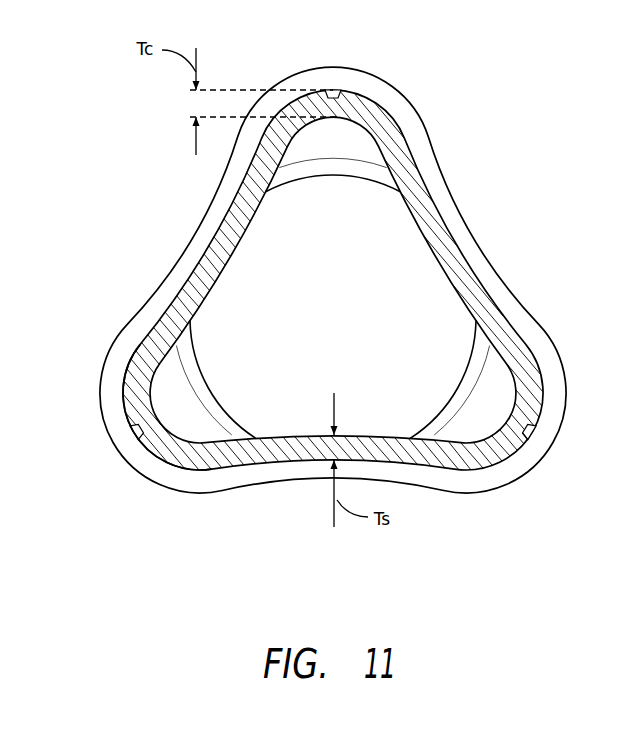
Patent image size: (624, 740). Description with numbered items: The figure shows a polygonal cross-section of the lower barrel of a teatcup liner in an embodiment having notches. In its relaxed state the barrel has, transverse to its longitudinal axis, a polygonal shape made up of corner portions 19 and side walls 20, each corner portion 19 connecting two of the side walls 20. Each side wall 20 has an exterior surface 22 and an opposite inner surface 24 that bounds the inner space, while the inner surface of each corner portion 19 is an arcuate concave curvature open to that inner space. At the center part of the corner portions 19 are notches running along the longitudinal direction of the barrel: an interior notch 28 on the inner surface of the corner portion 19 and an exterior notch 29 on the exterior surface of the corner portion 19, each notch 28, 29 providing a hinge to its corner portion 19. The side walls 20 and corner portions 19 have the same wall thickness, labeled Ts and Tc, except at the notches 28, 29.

The corner portion 19 is at (126, 368).
The side wall 20 is at (192, 250).
The exterior surface of side wall 22 is at (489, 273).
The inner surface of side wall 24 is at (437, 266).
The interior notch 28 is at (519, 420).
The exterior notch 29 is at (334, 89).